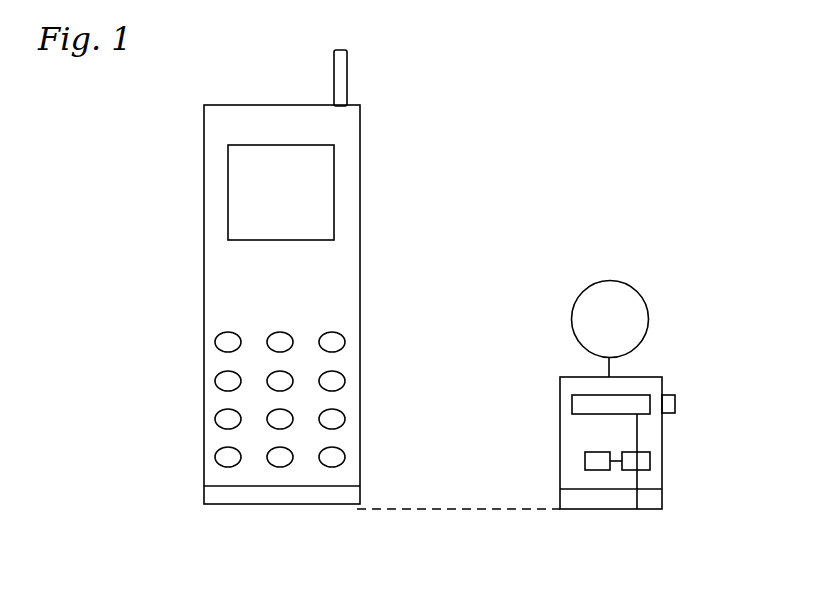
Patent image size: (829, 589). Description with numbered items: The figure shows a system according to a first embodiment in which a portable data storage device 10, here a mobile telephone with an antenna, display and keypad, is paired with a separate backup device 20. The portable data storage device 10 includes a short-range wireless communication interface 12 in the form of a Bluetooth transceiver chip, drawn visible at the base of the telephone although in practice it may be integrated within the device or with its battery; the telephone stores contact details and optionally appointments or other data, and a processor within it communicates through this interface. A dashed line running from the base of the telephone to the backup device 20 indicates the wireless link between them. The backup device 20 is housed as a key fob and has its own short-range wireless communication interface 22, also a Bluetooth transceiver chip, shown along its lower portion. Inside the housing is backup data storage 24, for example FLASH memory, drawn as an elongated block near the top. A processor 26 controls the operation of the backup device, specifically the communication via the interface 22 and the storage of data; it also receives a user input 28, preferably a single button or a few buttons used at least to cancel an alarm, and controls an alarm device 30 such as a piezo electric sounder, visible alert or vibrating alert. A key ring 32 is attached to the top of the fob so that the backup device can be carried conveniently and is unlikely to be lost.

The portable data storage device 10 is at (203, 257).
The short-range wireless communication interface 12 is at (228, 493).
The backup device 20 is at (637, 375).
The short-range wireless communication interface 22 is at (648, 500).
The backup data storage 24 is at (578, 404).
The processor 26 is at (650, 462).
The user input 28 is at (675, 403).
The alarm device 30 is at (588, 463).
The key ring 32 is at (648, 298).